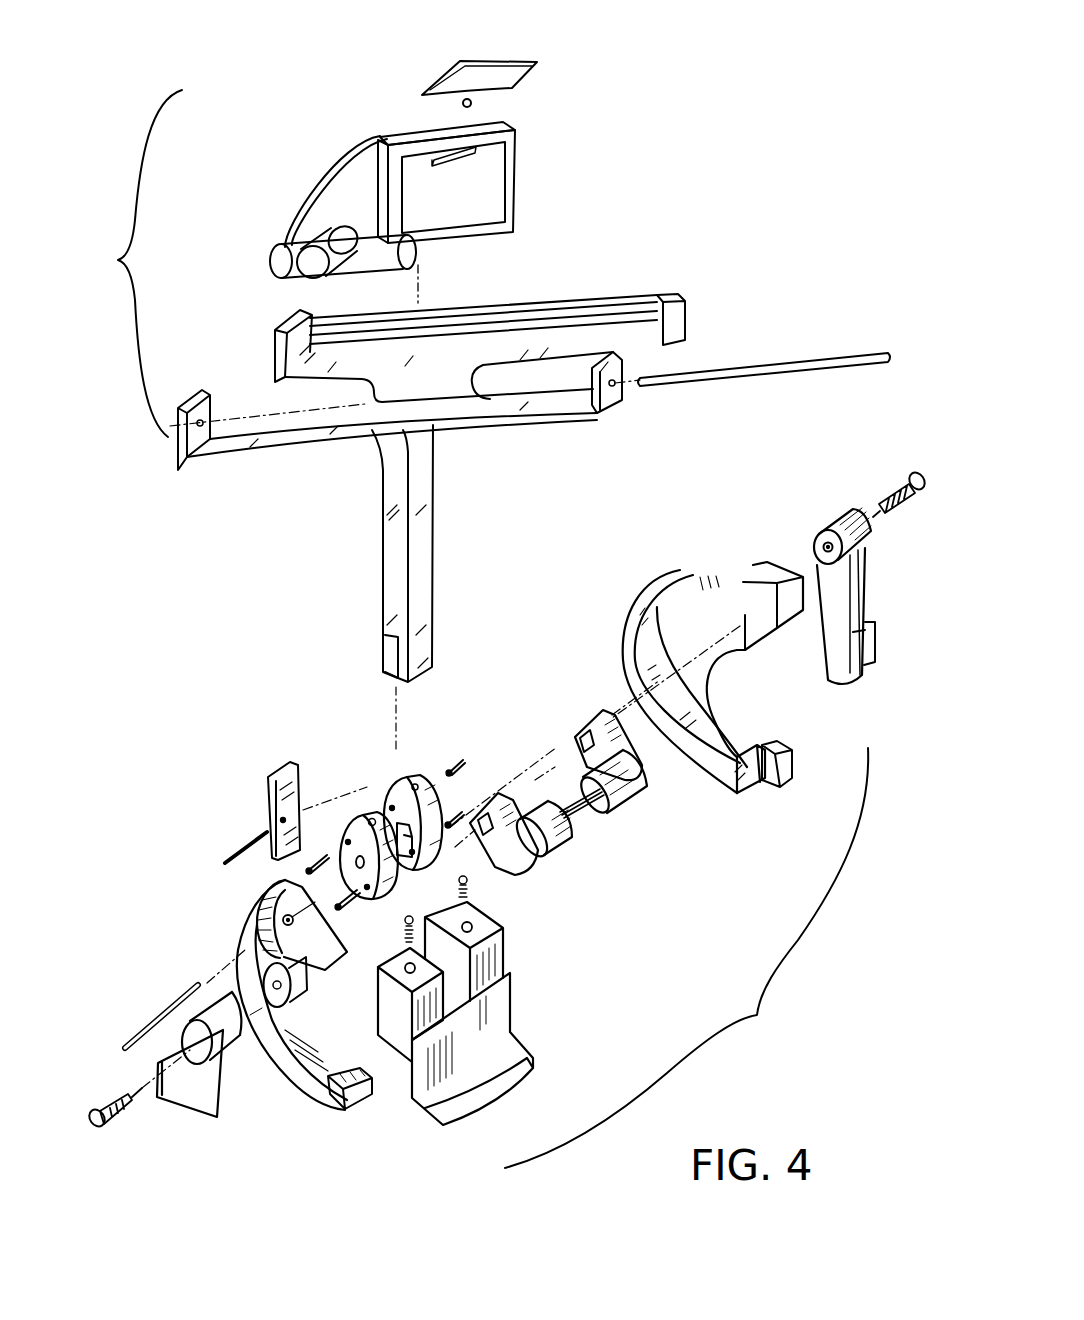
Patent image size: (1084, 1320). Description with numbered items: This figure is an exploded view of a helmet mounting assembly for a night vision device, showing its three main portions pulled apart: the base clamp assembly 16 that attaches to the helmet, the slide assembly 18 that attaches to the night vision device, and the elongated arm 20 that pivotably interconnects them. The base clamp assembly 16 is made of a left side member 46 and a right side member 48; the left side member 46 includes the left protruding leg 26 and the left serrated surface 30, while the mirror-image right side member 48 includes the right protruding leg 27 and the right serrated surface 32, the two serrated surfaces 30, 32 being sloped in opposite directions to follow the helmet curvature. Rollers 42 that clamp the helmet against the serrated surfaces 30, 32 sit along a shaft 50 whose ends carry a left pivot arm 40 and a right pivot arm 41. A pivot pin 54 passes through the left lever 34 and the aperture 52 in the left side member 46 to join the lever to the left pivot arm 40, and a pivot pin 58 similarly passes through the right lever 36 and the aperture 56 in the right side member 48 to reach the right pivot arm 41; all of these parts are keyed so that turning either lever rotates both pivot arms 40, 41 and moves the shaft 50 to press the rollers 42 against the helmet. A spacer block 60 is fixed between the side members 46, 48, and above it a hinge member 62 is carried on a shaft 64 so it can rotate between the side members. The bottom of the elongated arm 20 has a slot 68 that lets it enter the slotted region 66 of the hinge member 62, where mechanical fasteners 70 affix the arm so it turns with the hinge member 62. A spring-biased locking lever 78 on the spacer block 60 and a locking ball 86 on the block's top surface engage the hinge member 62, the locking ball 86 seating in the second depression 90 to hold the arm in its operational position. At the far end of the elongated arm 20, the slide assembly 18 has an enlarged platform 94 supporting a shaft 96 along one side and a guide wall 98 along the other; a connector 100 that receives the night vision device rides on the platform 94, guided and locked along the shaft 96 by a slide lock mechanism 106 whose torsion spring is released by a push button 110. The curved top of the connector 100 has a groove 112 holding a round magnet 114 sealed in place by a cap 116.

The base clamp assembly 16 is at (686, 958).
The slide assembly 18 is at (125, 263).
The elongated arm 20 is at (420, 597).
The left protruding leg 26 is at (285, 1078).
The right protruding leg 27 is at (722, 738).
The left serrated surface 30 is at (343, 1098).
The right serrated surface 32 is at (785, 750).
The left lever 34 is at (203, 1092).
The right lever 36 is at (875, 633).
The left pivot arm 40 is at (507, 860).
The right pivot arm 41 is at (620, 797).
The rollers 42 is at (557, 848).
The left side member 46 is at (262, 1015).
The right side member 48 is at (712, 647).
The shaft 50 is at (573, 800).
The aperture 52 is at (290, 990).
The pivot pin 54 is at (127, 1118).
The aperture 56 is at (772, 578).
The pivot pin 58 is at (903, 497).
The spacer block 60 is at (498, 1017).
The hinge member 62 is at (428, 768).
The shaft 64 is at (170, 1006).
The slotted region 66 is at (374, 815).
The slot 68 is at (385, 655).
The mechanical fasteners 70 is at (466, 812).
The locking lever 78 is at (266, 789).
The locking ball 86 is at (395, 936).
The second depression 90 is at (373, 820).
The enlarged platform 94 is at (280, 458).
The shaft 96 is at (727, 368).
The guide wall 98 is at (553, 297).
The connector 100 is at (512, 183).
The slide lock mechanism 106 is at (272, 245).
The push button 110 is at (315, 268).
The groove 112 is at (420, 135).
The round magnet 114 is at (478, 103).
The cap 116 is at (528, 52).